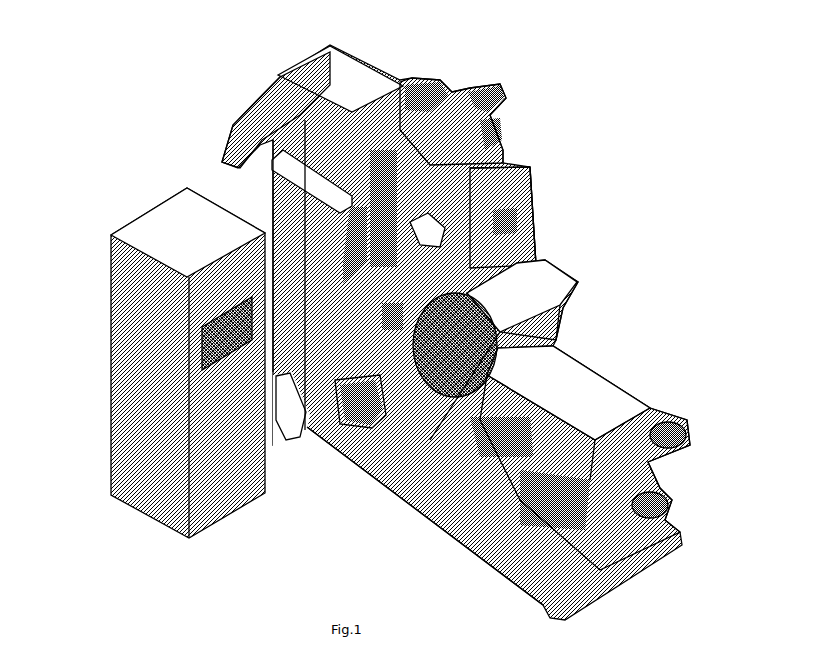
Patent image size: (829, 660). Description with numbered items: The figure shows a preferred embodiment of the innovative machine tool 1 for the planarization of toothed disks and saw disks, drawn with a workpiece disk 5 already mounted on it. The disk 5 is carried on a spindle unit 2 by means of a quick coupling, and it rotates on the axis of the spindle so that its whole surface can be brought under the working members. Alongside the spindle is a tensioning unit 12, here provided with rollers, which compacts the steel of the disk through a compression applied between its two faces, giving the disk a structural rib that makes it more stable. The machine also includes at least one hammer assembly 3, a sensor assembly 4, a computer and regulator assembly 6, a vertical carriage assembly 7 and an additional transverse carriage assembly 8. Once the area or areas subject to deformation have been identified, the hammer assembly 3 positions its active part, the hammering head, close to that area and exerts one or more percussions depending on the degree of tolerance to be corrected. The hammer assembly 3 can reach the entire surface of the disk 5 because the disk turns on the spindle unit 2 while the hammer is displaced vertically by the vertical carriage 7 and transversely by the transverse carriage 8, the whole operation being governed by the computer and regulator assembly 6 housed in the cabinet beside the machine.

The machine tool 1 is at (126, 97).
The spindle unit 2 is at (574, 293).
The hammer assembly 3 is at (542, 208).
The sensor assembly 4 is at (340, 455).
The workpiece disk 5 is at (458, 390).
The computer and regulator assembly 6 is at (146, 492).
The vertical carriage assembly 7 is at (318, 86).
The transverse carriage assembly 8 is at (514, 146).
The tensioning unit 12 is at (616, 392).